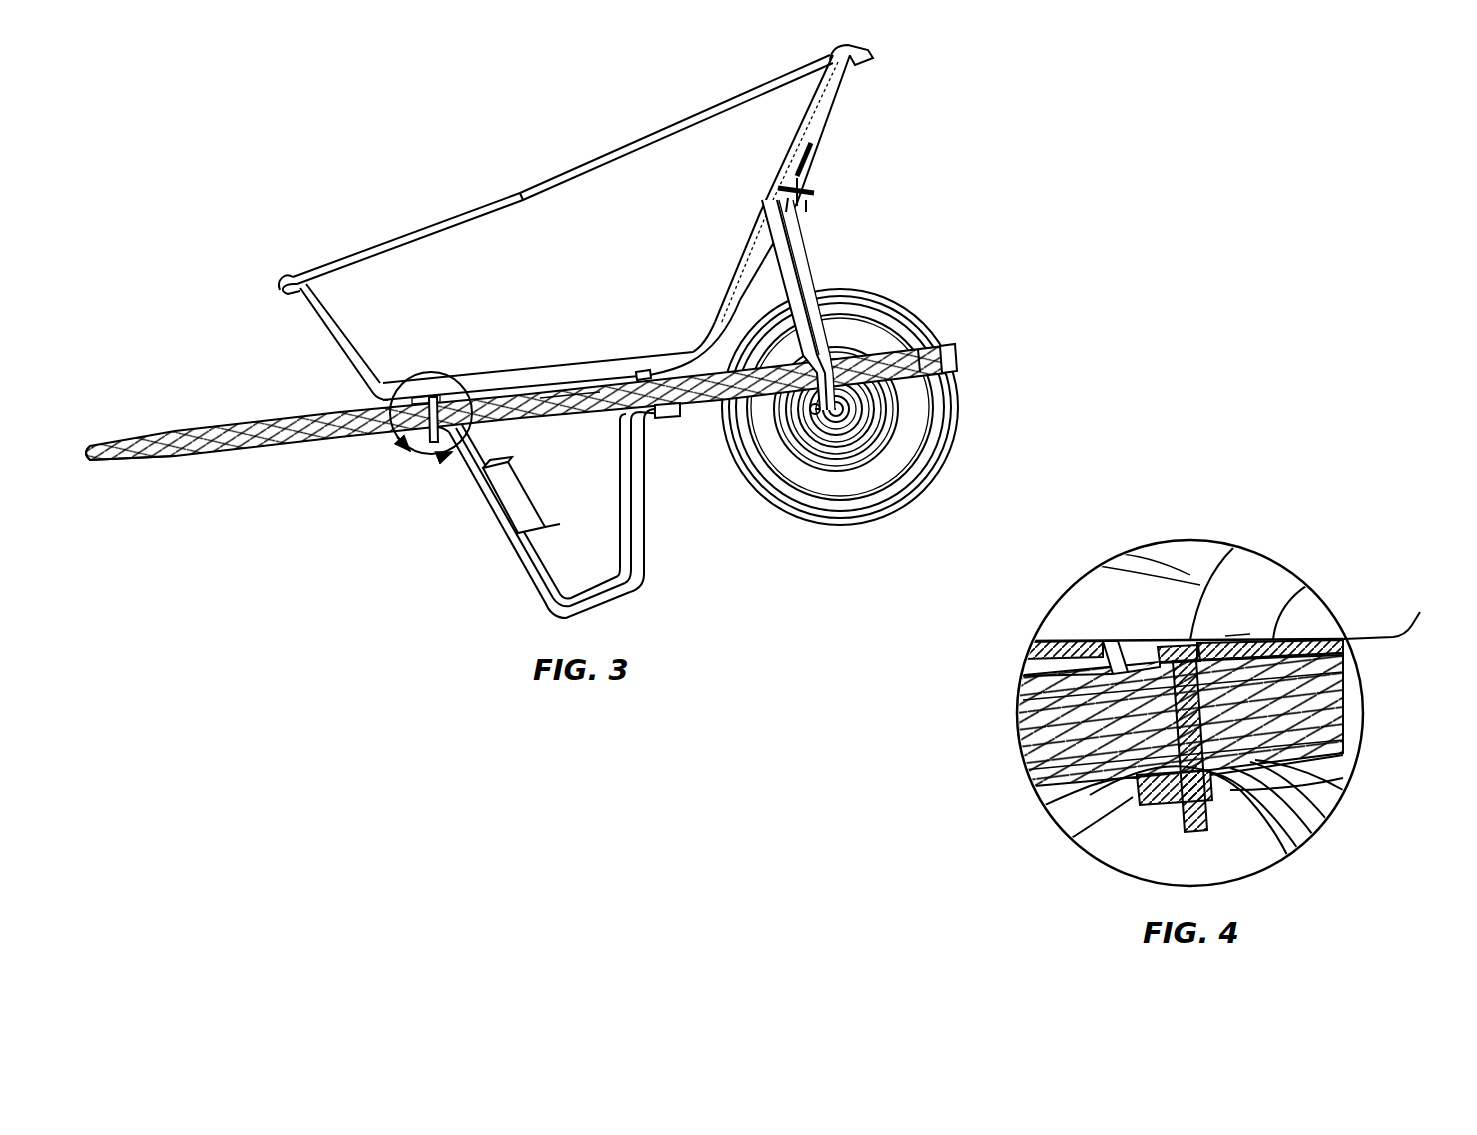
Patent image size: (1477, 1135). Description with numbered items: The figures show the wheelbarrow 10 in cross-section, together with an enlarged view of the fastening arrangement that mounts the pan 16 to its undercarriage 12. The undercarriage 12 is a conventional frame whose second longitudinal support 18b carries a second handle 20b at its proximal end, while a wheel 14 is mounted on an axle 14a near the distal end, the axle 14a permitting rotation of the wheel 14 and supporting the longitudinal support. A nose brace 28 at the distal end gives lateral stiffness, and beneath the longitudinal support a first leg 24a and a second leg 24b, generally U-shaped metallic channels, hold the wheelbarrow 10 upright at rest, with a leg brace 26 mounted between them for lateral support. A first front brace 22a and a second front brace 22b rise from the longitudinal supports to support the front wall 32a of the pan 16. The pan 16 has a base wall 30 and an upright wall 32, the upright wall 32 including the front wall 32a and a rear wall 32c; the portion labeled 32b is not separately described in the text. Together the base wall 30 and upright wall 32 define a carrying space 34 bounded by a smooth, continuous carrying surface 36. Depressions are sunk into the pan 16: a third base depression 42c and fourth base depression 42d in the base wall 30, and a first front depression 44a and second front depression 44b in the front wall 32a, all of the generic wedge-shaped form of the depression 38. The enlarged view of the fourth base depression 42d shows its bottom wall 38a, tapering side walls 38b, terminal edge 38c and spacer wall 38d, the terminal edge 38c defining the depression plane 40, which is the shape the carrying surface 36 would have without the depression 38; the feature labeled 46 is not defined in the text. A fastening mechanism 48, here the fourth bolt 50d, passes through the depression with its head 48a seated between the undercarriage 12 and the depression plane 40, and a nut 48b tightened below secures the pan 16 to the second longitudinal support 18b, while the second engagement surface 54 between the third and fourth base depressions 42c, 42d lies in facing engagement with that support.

In FIG. 3, the wheelbarrow 10 is at (350, 90).
In FIG. 3, the undercarriage 12 is at (500, 541).
In FIG. 3, the wheel 14 is at (890, 313).
In FIG. 3, the axle 14a is at (850, 409).
In FIG. 3, the pan 16 is at (650, 128).
In FIG. 3, the second longitudinal support 18b is at (285, 423).
In FIG. 4, the second longitudinal support 18b is at (1035, 733).
In FIG. 3, the second handle 20b is at (120, 463).
In FIG. 3, the first front brace 22a is at (799, 237).
In FIG. 3, the second front brace 22b is at (800, 273).
In FIG. 3, the first leg 24a is at (648, 550).
In FIG. 4, the first leg 24a is at (1350, 778).
In FIG. 3, the second leg 24b is at (525, 568).
In FIG. 4, the second leg 24b is at (1300, 840).
In FIG. 3, the leg brace 26 is at (495, 508).
In FIG. 3, the nose brace 28 is at (957, 356).
In FIG. 3, the base wall 30 is at (567, 400).
In FIG. 4, the base wall 30 is at (1348, 690).
In FIG. 3, the upright wall 32 is at (500, 232).
In FIG. 4, the upright wall 32 is at (1287, 583).
In FIG. 3, the front wall 32a is at (813, 130).
In FIG. 3, the rear wall upper edge of tray 32b is at (440, 250).
In FIG. 3, the rear wall 32c is at (340, 325).
In FIG. 3, the carrying space 34 is at (567, 232).
In FIG. 3, the carrying surface 36 is at (671, 265).
In FIG. 4, the carrying surface 36 is at (1187, 594).
In FIG. 4, the depression 38 is at (1140, 641).
In FIG. 4, the bottom wall 38a is at (1330, 717).
In FIG. 4, the side walls 38b is at (1300, 605).
In FIG. 4, the terminal edge 38c is at (1132, 641).
In FIG. 4, the spacer wall 38d is at (1030, 677).
In FIG. 4, the depression plane 40 is at (1399, 619).
In FIG. 3, the third base depression 42c is at (641, 368).
In FIG. 3, the fourth base depression 42d is at (417, 394).
In FIG. 4, the fourth base depression 42d is at (1228, 640).
In FIG. 3, the first front depression 44a is at (805, 168).
In FIG. 3, the second front depression 44b is at (772, 180).
In FIG. 4, the recess 46 is at (1140, 593).
In FIG. 4, the fastening mechanism 48 is at (1060, 812).
In FIG. 4, the head 48a is at (1233, 548).
In FIG. 4, the nut 48b is at (1085, 838).
In FIG. 3, the fourth bolt 50d is at (433, 397).
In FIG. 4, the fourth bolt 50d is at (1322, 733).
In FIG. 4, the second engagement surface 54 is at (1345, 667).